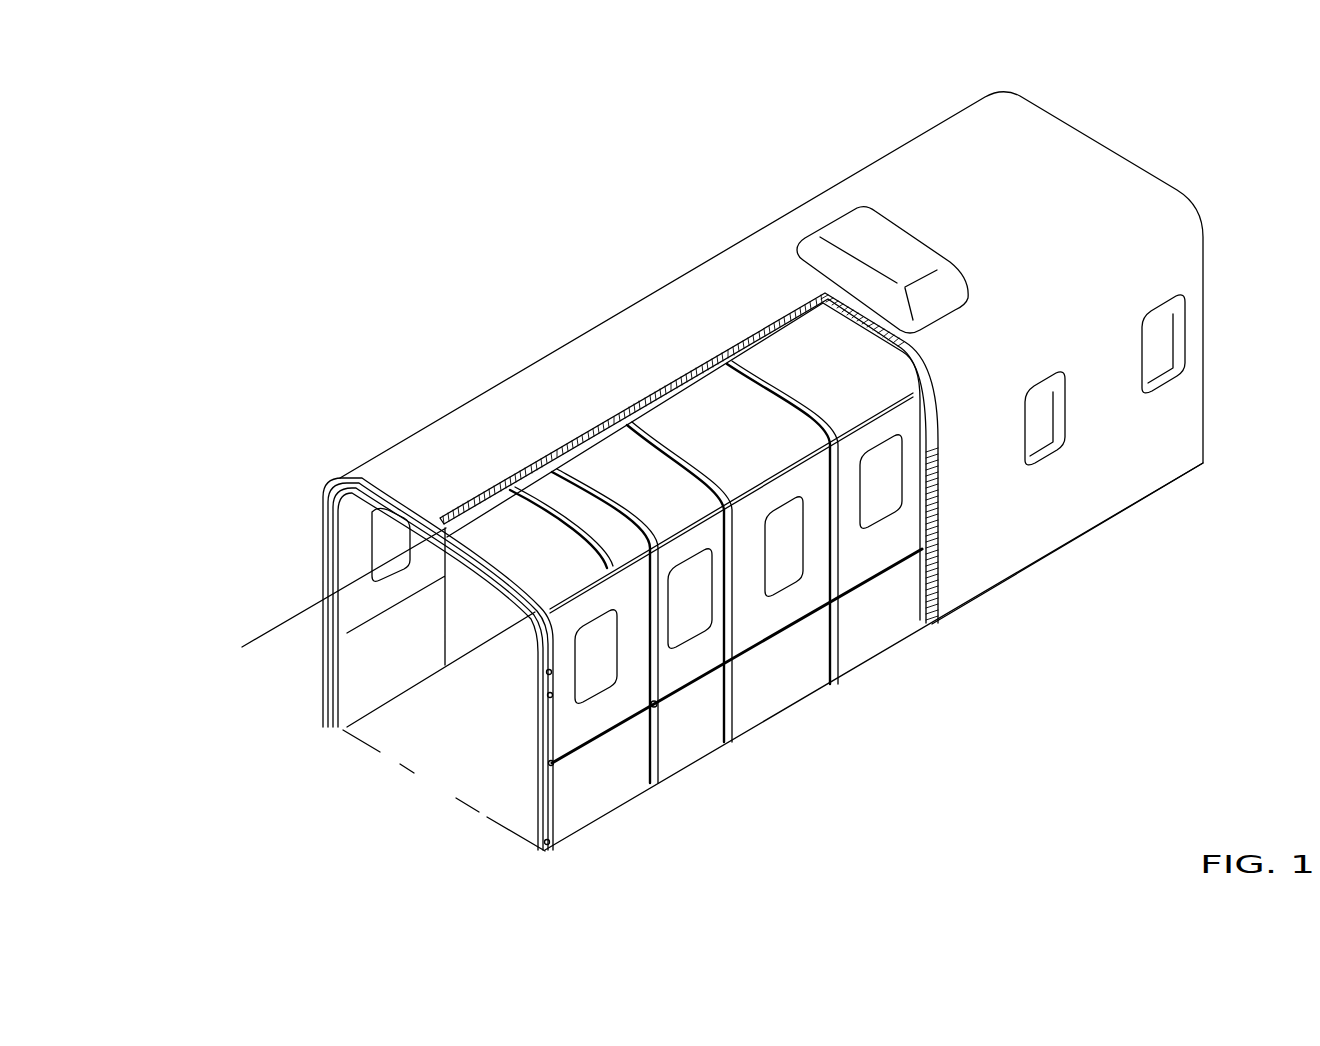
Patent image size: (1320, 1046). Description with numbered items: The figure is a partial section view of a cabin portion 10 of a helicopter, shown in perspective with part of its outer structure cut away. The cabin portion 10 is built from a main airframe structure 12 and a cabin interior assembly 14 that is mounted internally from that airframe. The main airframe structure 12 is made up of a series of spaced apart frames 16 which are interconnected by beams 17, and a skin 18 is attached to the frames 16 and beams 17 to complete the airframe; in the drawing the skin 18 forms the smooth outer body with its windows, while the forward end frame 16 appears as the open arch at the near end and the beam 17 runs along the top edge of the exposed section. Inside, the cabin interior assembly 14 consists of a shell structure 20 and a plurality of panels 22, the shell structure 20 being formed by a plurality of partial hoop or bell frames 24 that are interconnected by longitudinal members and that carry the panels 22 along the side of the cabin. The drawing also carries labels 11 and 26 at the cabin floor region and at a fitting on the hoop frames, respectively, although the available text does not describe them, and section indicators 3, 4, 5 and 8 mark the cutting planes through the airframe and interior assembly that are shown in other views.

The cabin portion 10 is at (948, 703).
The interior floor 11 is at (443, 743).
The main airframe structure 12 is at (1022, 532).
The cabin interior assembly 14 is at (536, 742).
The frames 16 is at (322, 576).
The beams 17 is at (490, 488).
The skin 18 is at (748, 283).
The shell structure 20 is at (762, 652).
The panels 22 is at (608, 709).
The partial hoop or bell frames 24 is at (545, 648).
The grommet 26 is at (658, 707).
The section line 3- 3 is at (250, 641).
The section line 4- 4 is at (503, 340).
The section line 5- 5 is at (707, 640).
The section line 8- 8 is at (566, 810).